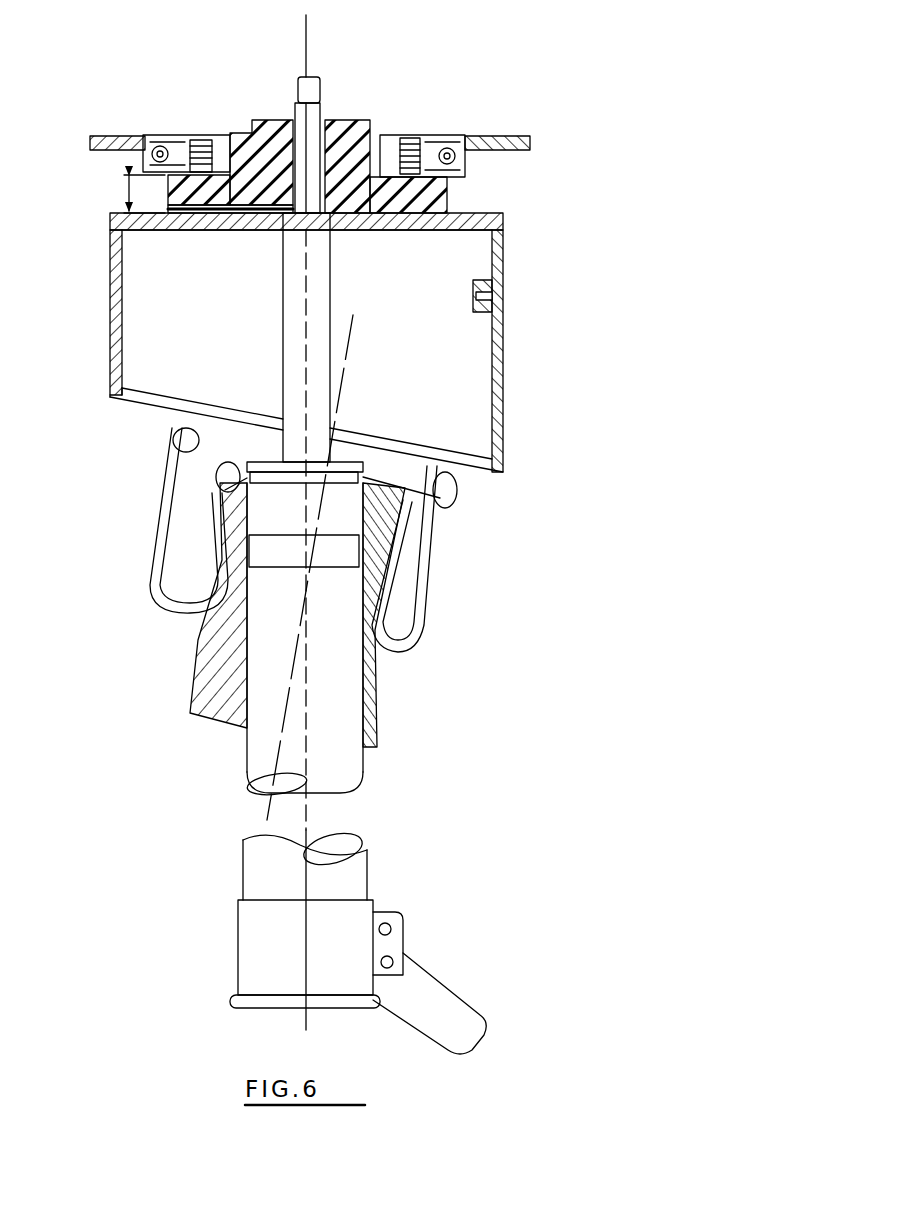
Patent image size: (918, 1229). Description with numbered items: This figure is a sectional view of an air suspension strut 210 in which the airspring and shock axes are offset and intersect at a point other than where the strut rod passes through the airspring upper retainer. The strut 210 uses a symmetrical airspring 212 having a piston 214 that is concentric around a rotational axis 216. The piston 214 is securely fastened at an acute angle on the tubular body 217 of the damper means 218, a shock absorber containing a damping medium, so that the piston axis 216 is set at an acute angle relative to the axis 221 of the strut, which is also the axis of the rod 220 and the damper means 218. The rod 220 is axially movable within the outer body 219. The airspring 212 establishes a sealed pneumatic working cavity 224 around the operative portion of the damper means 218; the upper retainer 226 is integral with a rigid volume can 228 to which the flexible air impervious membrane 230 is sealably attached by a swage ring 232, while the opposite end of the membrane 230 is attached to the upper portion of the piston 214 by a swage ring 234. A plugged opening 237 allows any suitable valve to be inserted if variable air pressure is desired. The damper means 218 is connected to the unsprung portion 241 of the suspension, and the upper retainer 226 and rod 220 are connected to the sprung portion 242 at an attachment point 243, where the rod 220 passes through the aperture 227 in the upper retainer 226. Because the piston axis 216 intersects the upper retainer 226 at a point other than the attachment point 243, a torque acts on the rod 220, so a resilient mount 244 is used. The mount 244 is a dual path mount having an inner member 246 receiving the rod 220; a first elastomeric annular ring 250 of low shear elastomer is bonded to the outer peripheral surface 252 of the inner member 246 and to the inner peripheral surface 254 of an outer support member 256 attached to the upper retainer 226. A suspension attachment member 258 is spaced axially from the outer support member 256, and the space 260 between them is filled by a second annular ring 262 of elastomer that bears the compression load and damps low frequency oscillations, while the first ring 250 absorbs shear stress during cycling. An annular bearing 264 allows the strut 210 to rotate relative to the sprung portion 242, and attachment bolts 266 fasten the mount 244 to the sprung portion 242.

The air suspension strut 210 is at (497, 55).
The airspring 212 is at (449, 559).
The piston 214 is at (375, 688).
The rotational axis 216 is at (267, 810).
The tubular body 217 is at (368, 767).
The damper means 218 is at (243, 732).
The outer body 219 is at (200, 668).
The rod 220 is at (307, 317).
The axis of the strut 221 is at (312, 45).
The working cavity 224 is at (478, 400).
The upper retainer 226 is at (478, 217).
The aperture 227 is at (367, 231).
The volume can 228 is at (110, 286).
The flexible membrane 230 is at (432, 597).
The swage ring 232 is at (455, 498).
The swage ring 234 is at (223, 479).
The plugged opening 237 is at (502, 308).
The unsprung portion 241 is at (393, 947).
The sprung portion 242 is at (113, 137).
The attachment point 243 is at (298, 225).
The resilient mount 244 is at (410, 135).
The inner member 246 is at (330, 127).
The first elastomeric annular ring 250 is at (367, 130).
The outer peripheral surface 252 is at (347, 123).
The inner peripheral surface 254 is at (280, 99).
The outer support member 256 is at (220, 226).
The suspension attachment member 258 is at (240, 135).
The space 260 is at (126, 190).
The second annular ring 262 is at (200, 220).
The annular bearing 264 is at (172, 135).
The attachment bolts 266 is at (237, 137).